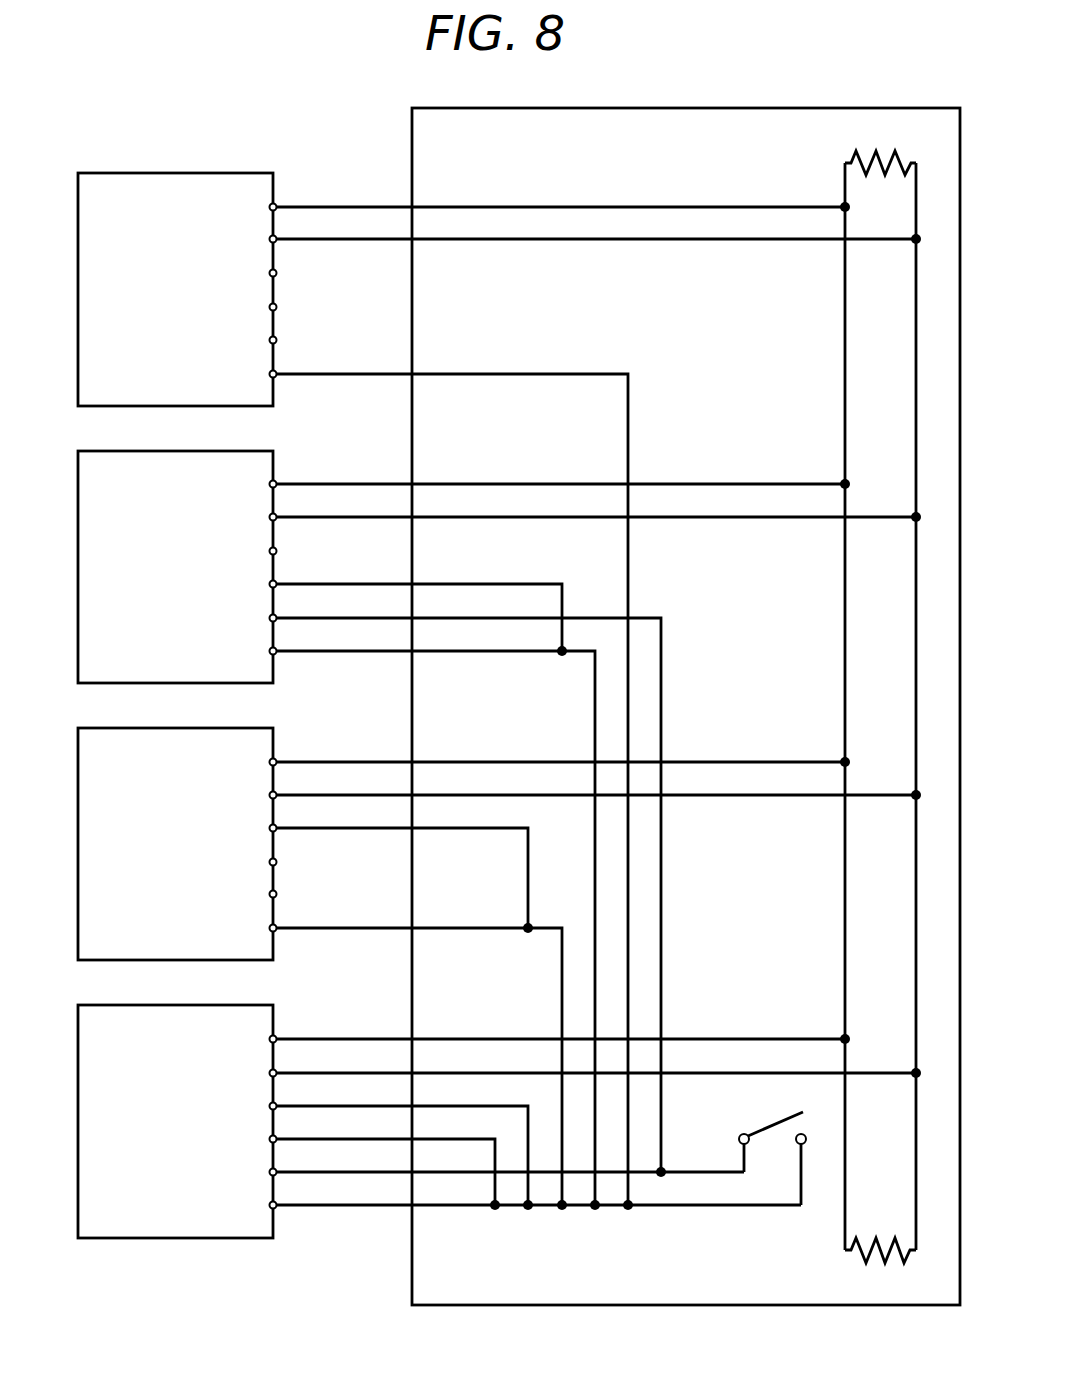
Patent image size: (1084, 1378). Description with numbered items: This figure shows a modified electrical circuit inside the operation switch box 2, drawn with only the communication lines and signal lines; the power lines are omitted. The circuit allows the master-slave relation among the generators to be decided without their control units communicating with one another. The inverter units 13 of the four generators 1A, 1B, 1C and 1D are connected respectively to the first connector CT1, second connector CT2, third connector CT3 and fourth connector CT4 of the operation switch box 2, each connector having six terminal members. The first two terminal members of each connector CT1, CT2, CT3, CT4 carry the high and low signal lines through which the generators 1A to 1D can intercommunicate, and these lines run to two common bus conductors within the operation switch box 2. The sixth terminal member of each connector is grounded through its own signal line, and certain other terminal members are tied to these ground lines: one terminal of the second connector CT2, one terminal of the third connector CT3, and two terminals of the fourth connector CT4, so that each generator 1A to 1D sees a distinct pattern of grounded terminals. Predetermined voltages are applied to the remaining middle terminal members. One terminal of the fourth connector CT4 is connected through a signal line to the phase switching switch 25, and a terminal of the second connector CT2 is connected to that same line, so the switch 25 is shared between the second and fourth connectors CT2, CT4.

The generator 1A is at (221, 250).
The generator 1B is at (257, 545).
The generator 1C is at (257, 822).
The generator 1D is at (203, 1131).
The inverter unit 13 is at (257, 697).
The operation switch box 2 is at (616, 682).
The phase switching switch 25 is at (780, 1120).
The first connector CT1 is at (343, 147).
The second connector CT2 is at (398, 556).
The third connector CT3 is at (398, 875).
The fourth connector CT4 is at (347, 1236).